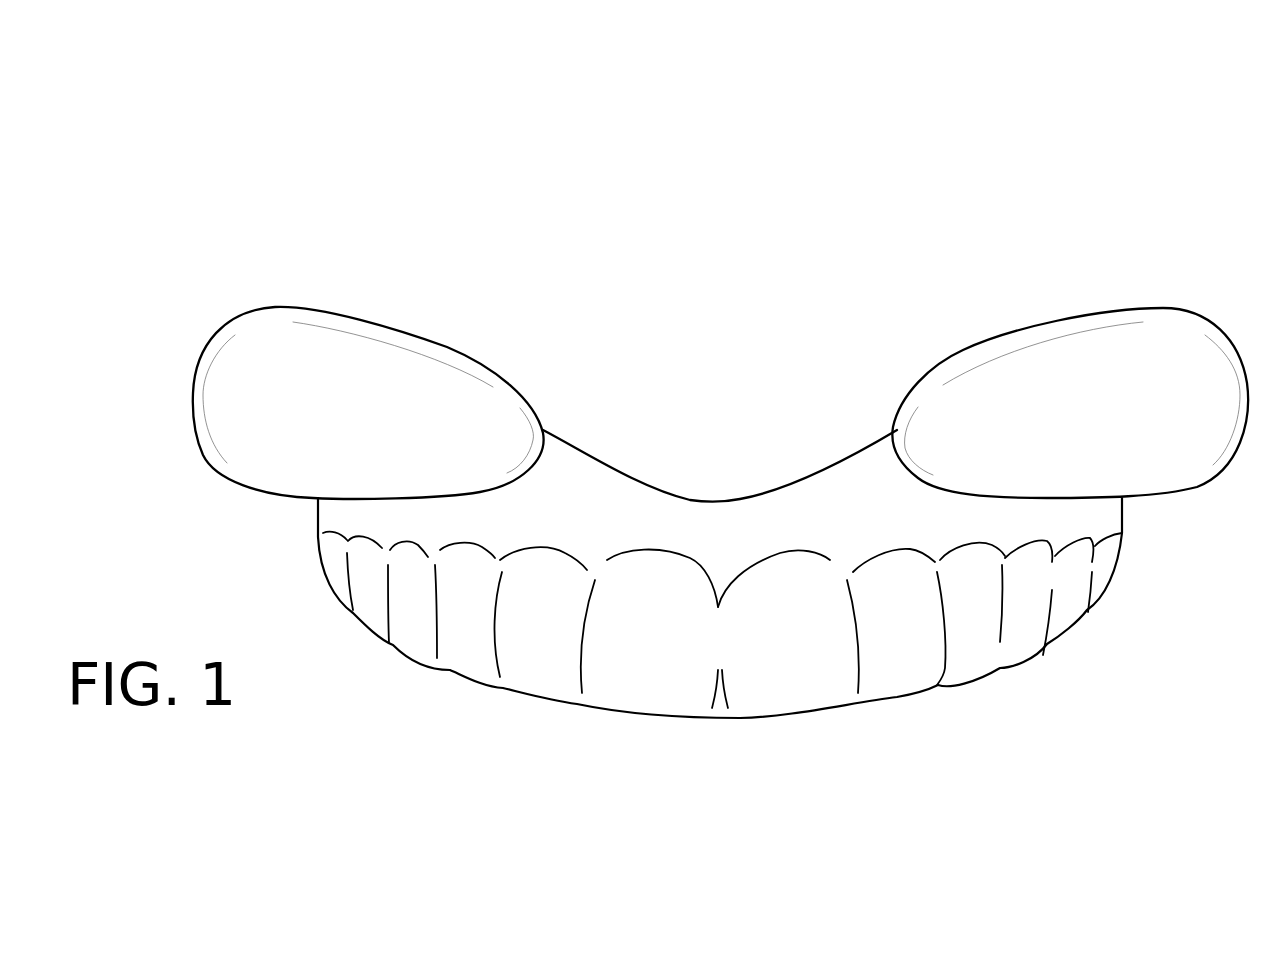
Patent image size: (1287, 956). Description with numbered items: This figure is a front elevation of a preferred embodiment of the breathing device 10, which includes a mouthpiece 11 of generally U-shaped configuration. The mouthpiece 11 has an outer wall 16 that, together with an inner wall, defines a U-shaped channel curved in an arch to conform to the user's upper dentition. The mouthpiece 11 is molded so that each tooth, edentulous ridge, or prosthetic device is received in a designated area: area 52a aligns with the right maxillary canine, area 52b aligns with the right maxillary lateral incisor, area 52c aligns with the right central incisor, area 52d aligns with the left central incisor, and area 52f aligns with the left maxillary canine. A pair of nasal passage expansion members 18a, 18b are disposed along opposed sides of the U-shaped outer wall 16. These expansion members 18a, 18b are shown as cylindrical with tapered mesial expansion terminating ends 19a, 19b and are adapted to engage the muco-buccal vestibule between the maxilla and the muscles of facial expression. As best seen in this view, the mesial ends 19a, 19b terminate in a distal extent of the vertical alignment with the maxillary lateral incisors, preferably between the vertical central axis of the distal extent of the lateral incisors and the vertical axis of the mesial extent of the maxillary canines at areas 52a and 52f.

The breathing device 10 is at (891, 196).
The mouthpiece 11 is at (702, 500).
The outer wall 16 is at (373, 512).
The nasal passage expansion member 18a is at (370, 365).
The nasal passage expansion member 18b is at (1168, 318).
The mesial expansion terminating end 19a is at (523, 443).
The mesial expansion terminating end 19b is at (905, 432).
The right maxillary canine area 52a is at (467, 637).
The right maxillary lateral incisor area 52b is at (537, 667).
The right central incisor area 52c is at (640, 678).
The left central incisor area 52d is at (788, 675).
The left maxillary canine area 52f is at (980, 640).